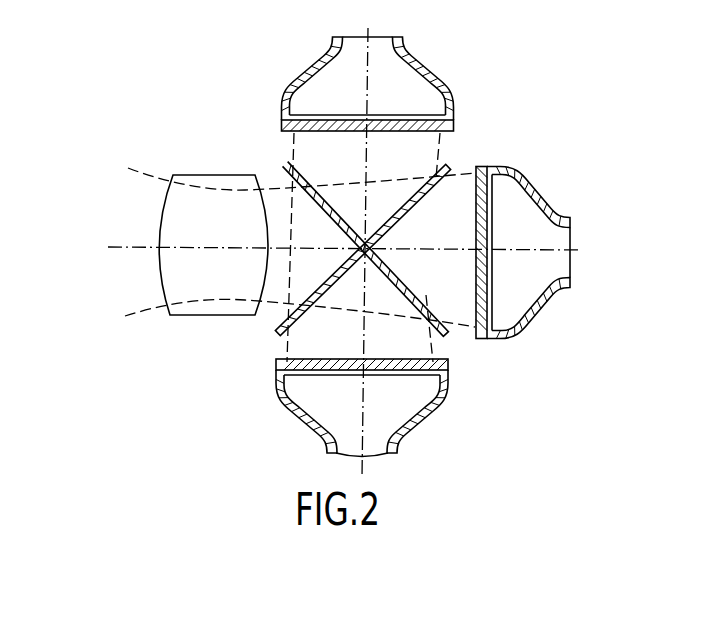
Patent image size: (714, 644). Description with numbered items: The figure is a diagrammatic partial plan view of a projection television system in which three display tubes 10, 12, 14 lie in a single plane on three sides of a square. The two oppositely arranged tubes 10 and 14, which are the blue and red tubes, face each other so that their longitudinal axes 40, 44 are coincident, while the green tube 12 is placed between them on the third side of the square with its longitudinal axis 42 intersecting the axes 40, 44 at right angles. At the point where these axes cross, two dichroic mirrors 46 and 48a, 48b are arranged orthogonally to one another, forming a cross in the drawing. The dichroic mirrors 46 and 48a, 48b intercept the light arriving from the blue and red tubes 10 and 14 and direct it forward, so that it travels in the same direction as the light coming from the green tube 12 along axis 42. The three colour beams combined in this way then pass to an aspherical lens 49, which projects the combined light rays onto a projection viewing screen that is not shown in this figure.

The tube 10 is at (423, 415).
The tube 12 is at (527, 310).
The tube 14 is at (447, 98).
The longitudinal axis 40 is at (358, 437).
The longitudinal axis 42 is at (540, 252).
The longitudinal axis 44 is at (377, 63).
The dichroic mirror 46 is at (413, 205).
The dichroic mirror 48a is at (289, 168).
The dichroic mirror 48b is at (402, 283).
The aspherical lens 49 is at (210, 307).